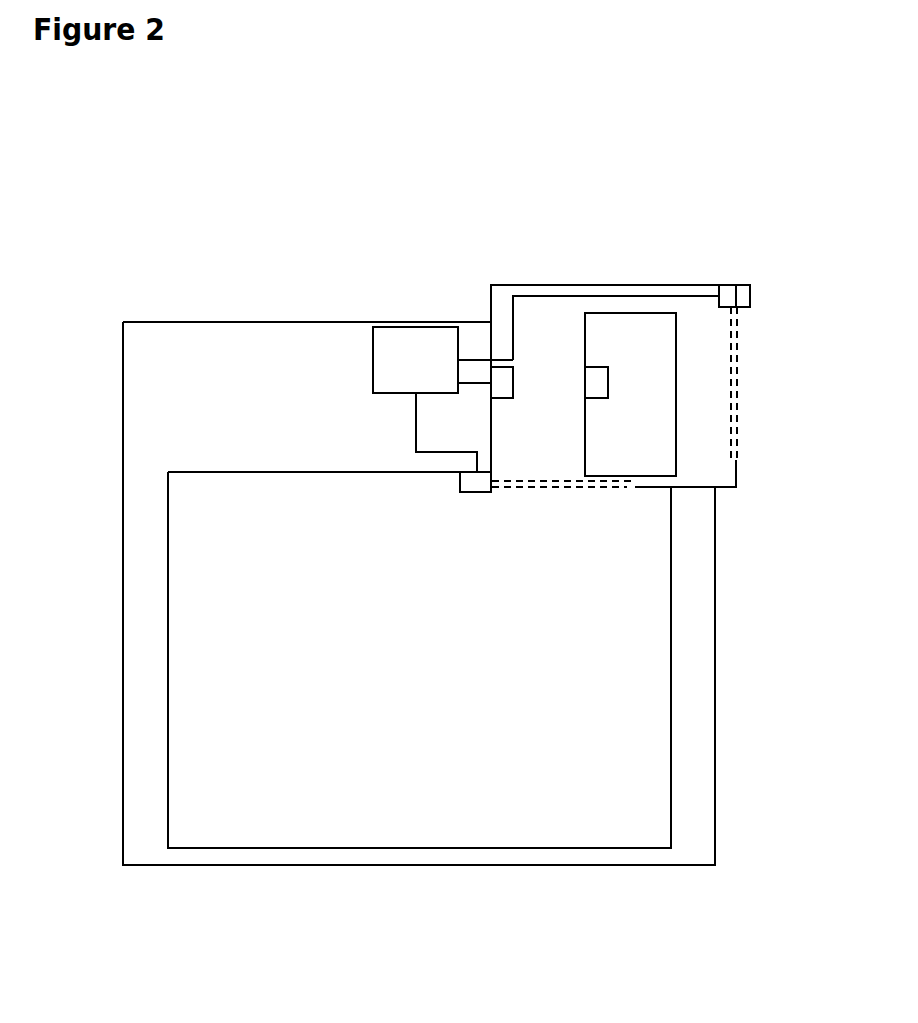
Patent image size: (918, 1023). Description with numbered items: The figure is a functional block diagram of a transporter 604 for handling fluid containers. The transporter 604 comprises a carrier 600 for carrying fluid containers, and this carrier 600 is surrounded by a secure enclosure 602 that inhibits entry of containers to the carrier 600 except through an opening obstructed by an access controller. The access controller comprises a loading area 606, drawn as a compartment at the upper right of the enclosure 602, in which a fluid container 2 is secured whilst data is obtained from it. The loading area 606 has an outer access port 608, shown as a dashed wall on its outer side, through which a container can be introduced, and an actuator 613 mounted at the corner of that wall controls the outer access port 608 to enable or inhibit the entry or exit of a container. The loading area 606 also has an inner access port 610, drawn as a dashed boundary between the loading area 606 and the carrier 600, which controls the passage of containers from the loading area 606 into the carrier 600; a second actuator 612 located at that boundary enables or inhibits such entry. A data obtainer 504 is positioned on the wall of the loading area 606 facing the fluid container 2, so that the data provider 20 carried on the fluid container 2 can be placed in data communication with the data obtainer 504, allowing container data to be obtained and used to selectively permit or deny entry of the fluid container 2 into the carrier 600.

The fluid container 2 is at (625, 362).
The data provider 20 is at (608, 383).
The data obtainer 504 is at (500, 398).
The carrier 600 is at (440, 670).
The enclosure 602 is at (715, 733).
The transporter 604 is at (320, 300).
The loading area 606 is at (703, 373).
The outer access port 608 is at (737, 423).
The inner access port 610 is at (567, 487).
The second actuator 612 is at (473, 493).
The actuator 613 is at (750, 300).